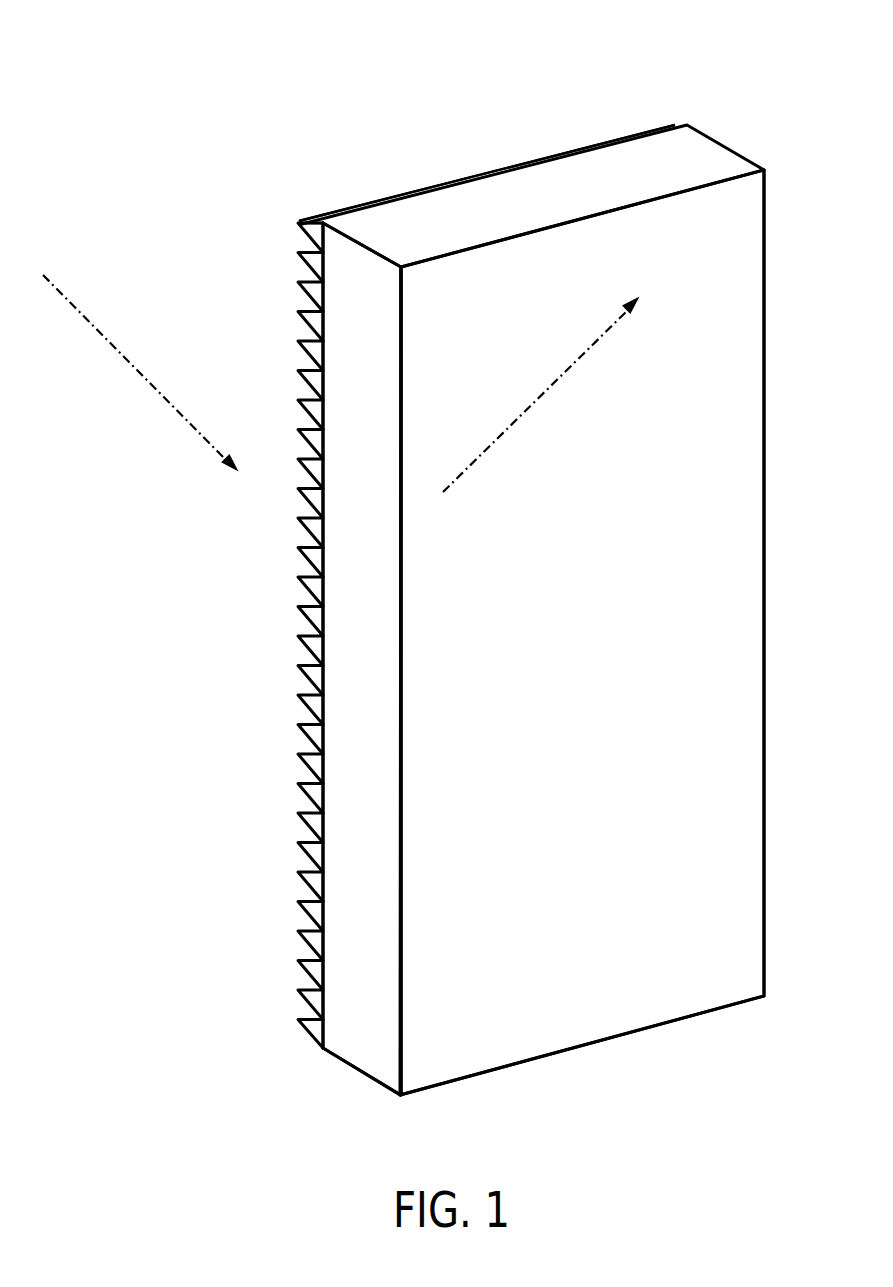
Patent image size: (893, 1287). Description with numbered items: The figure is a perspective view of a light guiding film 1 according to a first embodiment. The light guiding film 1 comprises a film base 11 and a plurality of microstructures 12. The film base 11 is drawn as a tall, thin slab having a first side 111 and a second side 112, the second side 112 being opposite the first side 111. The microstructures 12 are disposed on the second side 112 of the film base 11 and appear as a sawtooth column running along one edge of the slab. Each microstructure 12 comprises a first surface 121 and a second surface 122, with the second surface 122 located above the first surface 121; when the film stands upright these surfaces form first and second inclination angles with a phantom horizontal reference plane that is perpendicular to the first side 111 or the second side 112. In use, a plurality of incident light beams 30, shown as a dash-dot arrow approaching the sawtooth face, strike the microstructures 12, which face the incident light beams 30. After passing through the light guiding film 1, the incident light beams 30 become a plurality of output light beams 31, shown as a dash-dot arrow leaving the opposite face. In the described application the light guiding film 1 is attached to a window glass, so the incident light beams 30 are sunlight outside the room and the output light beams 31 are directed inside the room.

The light guiding film 1 is at (630, 98).
The film base 11 is at (355, 257).
The first side 111 is at (448, 280).
The second side 112 is at (313, 219).
The microstructure 12 is at (297, 227).
The first surface 121 is at (310, 241).
The second surface 122 is at (310, 221).
The incident light beams 30 is at (133, 368).
The output light beams 31 is at (535, 403).